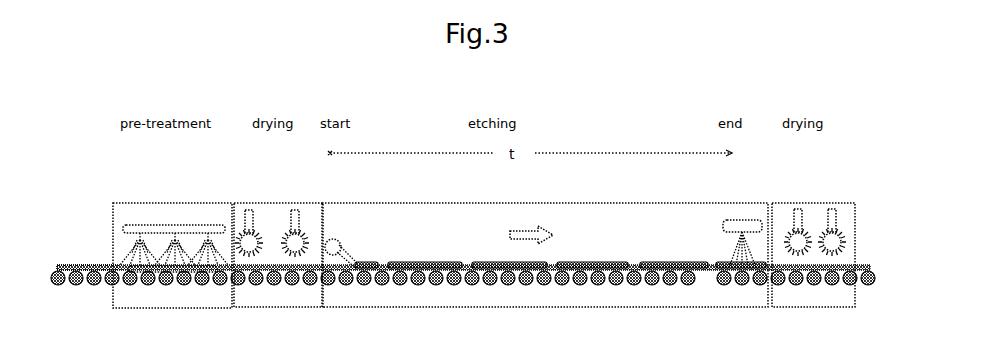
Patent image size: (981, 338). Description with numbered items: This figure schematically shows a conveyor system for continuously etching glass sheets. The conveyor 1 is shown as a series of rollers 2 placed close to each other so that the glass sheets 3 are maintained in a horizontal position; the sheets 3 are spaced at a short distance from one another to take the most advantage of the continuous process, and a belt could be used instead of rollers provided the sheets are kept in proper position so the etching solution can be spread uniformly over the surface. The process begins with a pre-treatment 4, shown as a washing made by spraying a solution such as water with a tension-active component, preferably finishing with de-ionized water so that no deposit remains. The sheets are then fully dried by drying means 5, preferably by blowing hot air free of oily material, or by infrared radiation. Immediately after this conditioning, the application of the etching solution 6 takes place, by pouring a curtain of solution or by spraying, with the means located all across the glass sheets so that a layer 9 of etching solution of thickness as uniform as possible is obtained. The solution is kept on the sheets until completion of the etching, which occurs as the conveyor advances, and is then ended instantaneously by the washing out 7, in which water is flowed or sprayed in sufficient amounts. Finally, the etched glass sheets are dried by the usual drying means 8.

The conveyor 1 is at (880, 278).
The rollers 2 is at (53, 273).
The glass sheets 3 is at (95, 264).
The pre-treatment 4 is at (137, 224).
The drying means 5 is at (243, 212).
The application of the etching solution 6 is at (331, 240).
The washing out 7 is at (742, 222).
The drying means 8 is at (834, 212).
The layer 9 is at (422, 262).